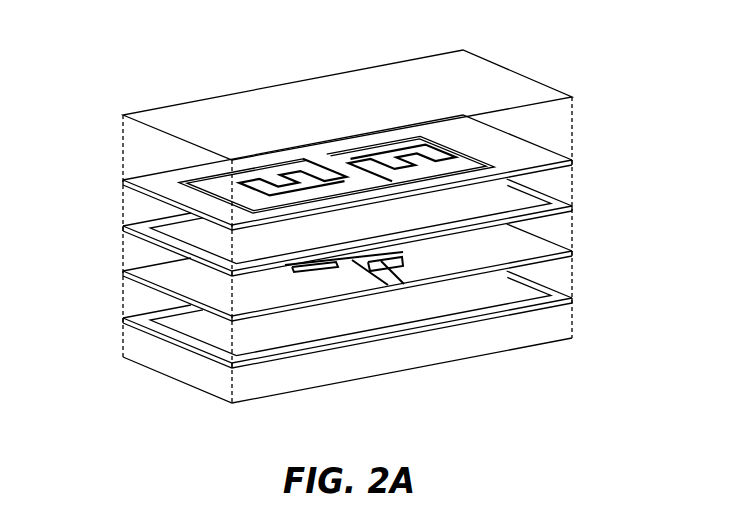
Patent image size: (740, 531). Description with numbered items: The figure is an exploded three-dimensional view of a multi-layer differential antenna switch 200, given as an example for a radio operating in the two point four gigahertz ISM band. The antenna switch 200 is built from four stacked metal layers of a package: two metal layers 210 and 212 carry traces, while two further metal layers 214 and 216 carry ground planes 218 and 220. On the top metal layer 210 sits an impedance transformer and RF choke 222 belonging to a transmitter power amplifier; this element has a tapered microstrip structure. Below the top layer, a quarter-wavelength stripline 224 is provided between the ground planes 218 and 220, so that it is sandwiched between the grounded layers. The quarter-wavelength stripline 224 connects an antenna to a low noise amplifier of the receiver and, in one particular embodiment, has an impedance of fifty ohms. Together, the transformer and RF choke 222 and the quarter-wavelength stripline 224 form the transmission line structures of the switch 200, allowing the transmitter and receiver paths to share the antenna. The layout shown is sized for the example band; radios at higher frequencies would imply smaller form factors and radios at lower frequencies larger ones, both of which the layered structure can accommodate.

The antenna switch 200 is at (236, 42).
The top metal layer 210 is at (150, 183).
The metal layer 212 is at (150, 275).
The metal layer 214 is at (147, 229).
The metal layer 216 is at (147, 322).
The ground plane 218 is at (527, 203).
The ground plane 220 is at (527, 298).
The impedance transformer and RF choke 222 is at (483, 148).
The quarter-wavelength stripline 224 is at (412, 258).